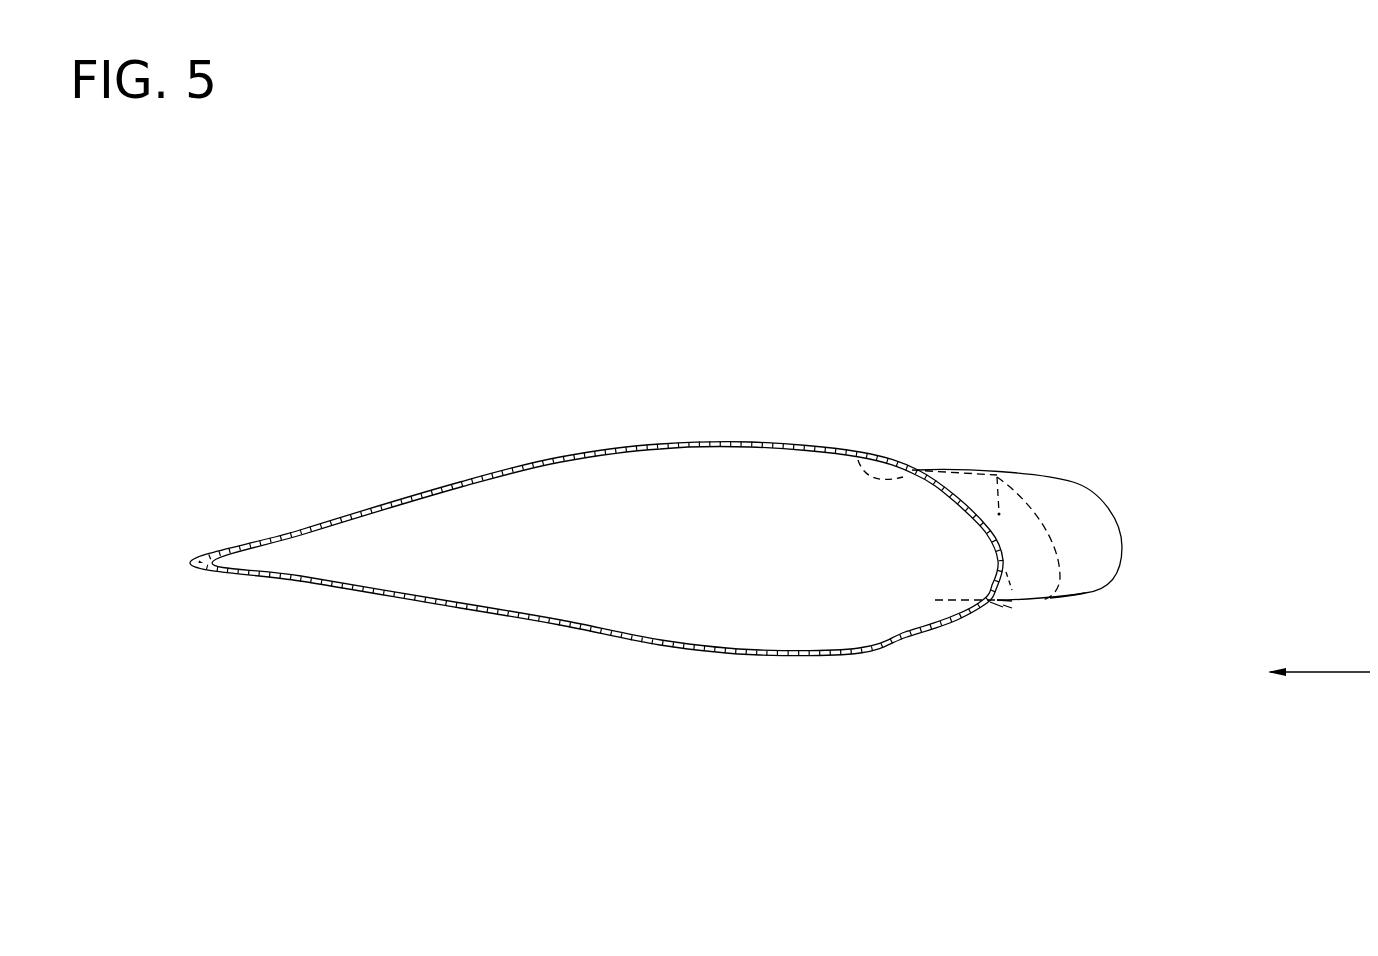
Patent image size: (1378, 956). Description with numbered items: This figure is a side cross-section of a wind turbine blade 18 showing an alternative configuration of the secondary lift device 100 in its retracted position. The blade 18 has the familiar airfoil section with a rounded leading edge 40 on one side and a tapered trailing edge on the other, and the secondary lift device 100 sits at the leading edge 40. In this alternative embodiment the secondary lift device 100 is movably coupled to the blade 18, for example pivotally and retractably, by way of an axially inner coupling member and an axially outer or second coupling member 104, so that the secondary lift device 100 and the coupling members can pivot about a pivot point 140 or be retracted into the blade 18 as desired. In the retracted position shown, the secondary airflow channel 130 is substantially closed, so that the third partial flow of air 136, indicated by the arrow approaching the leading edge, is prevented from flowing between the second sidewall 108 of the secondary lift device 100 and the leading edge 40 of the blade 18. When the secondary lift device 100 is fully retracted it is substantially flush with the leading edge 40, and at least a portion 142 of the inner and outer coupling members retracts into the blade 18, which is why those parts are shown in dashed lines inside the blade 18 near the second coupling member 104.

The blade 18 is at (253, 288).
The leading edge 40 is at (1002, 607).
The secondary lift device 100 is at (1172, 477).
The second coupling member 104 is at (1107, 590).
The second sidewall 108 is at (1005, 600).
The secondary airflow channel 130 is at (1014, 636).
The third partial flow of air 136 is at (1320, 672).
The pivot point 140 is at (997, 477).
The portion of coupling members 142 is at (858, 460).